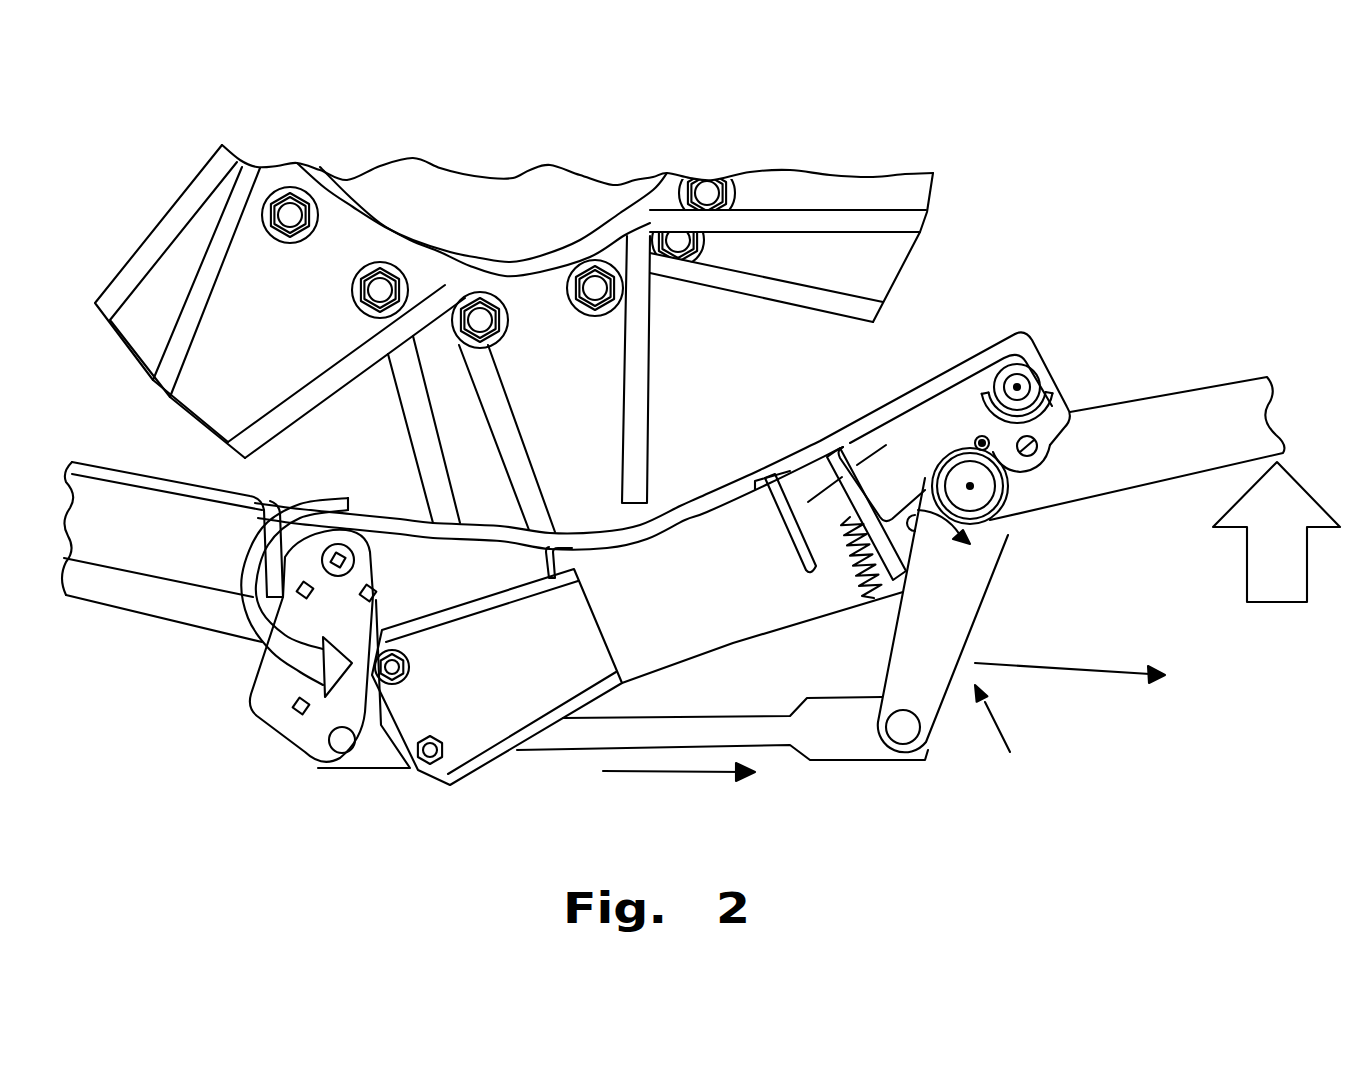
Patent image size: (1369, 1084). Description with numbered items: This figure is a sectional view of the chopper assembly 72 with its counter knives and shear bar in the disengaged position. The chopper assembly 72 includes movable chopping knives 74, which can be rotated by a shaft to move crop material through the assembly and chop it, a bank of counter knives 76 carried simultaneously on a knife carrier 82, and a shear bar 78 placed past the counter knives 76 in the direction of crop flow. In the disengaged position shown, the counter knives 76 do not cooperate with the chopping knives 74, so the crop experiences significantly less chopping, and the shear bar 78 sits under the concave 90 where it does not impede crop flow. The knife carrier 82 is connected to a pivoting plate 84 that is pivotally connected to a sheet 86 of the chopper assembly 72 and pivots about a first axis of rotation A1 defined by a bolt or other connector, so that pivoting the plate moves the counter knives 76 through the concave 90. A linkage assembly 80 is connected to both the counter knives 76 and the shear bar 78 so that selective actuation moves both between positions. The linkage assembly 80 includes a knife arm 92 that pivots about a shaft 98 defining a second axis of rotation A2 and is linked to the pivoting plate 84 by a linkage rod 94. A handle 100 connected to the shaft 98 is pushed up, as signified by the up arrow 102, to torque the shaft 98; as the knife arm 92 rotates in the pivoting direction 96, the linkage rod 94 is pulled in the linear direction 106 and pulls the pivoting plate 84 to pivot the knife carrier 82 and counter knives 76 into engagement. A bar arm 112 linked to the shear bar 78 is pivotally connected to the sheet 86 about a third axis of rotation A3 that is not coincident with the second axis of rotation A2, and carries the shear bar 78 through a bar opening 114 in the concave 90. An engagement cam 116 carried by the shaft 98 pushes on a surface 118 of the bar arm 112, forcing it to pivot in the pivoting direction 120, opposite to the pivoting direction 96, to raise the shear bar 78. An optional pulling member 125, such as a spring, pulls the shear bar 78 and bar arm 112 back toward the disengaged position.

The chopper assembly 72 is at (885, 138).
The chopping knives 74 is at (417, 427).
The counter knives 76 is at (590, 620).
The shear bar 78 is at (797, 525).
The linkage assembly 80 is at (1005, 733).
The knife carrier 82 is at (380, 727).
The pivoting plate 84 is at (267, 714).
The sheet 86 is at (447, 590).
The concave 90 is at (735, 485).
The knife arm 92 is at (978, 572).
The linkage rod 94 is at (741, 716).
The pivoting direction 96 is at (255, 642).
The shaft 98 is at (960, 505).
The handle 100 is at (1172, 408).
The up arrow 102 is at (1240, 577).
The linear direction 106 is at (1065, 672).
The bar arm 112 is at (950, 443).
The bar opening 114 is at (830, 445).
The engagement cam 116 is at (1005, 449).
The surface 118 is at (917, 487).
The pivoting direction 120 is at (1053, 407).
The pulling member 125 is at (850, 558).
The first axis of rotation A1 is at (345, 550).
The second axis of rotation A2 is at (975, 490).
The third axis of rotation A3 is at (1020, 387).